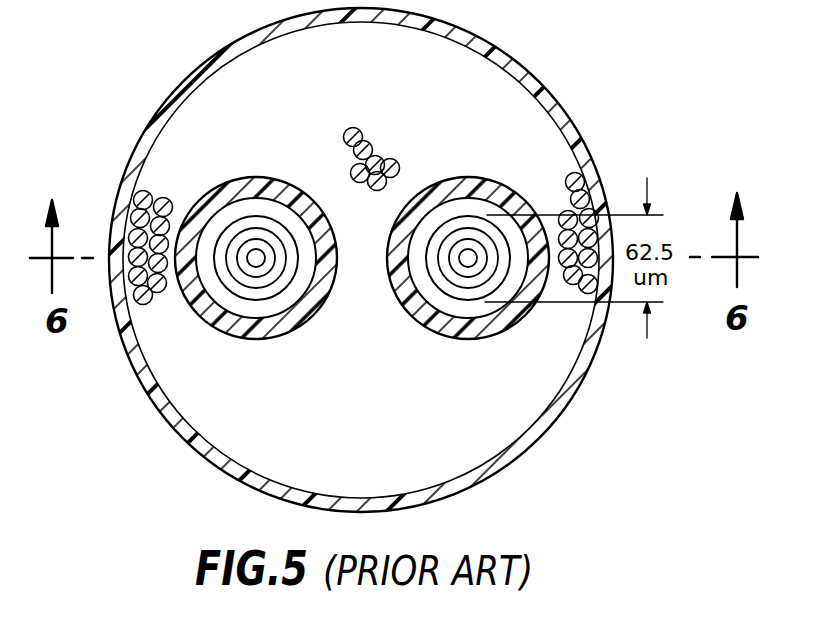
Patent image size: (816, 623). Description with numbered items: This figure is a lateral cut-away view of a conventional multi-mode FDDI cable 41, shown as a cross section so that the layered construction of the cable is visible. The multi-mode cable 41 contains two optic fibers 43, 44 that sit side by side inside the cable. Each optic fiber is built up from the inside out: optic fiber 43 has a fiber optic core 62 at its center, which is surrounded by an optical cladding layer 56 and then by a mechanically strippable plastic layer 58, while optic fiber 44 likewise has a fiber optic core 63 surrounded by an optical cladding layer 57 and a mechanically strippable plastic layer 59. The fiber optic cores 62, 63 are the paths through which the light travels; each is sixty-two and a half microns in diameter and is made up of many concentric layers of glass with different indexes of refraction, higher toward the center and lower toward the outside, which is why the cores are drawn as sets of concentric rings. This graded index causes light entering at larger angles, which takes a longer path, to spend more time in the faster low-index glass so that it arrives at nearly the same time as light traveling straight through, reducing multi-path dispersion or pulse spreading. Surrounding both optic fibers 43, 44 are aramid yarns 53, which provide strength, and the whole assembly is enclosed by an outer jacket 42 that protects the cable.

The multi-mode cable 41 is at (570, 424).
The outer jacket 42 is at (556, 108).
The optic fiber 43 is at (463, 261).
The optic fiber 44 is at (253, 273).
The aramid yarns 53 is at (135, 205).
The optical cladding layer 56 is at (443, 302).
The optical cladding layer 57 is at (254, 312).
The mechanically strippable plastic layer 58 is at (503, 193).
The mechanically strippable plastic layer 59 is at (226, 190).
The fiber optic core 62 is at (459, 216).
The fiber optic core 63 is at (258, 214).